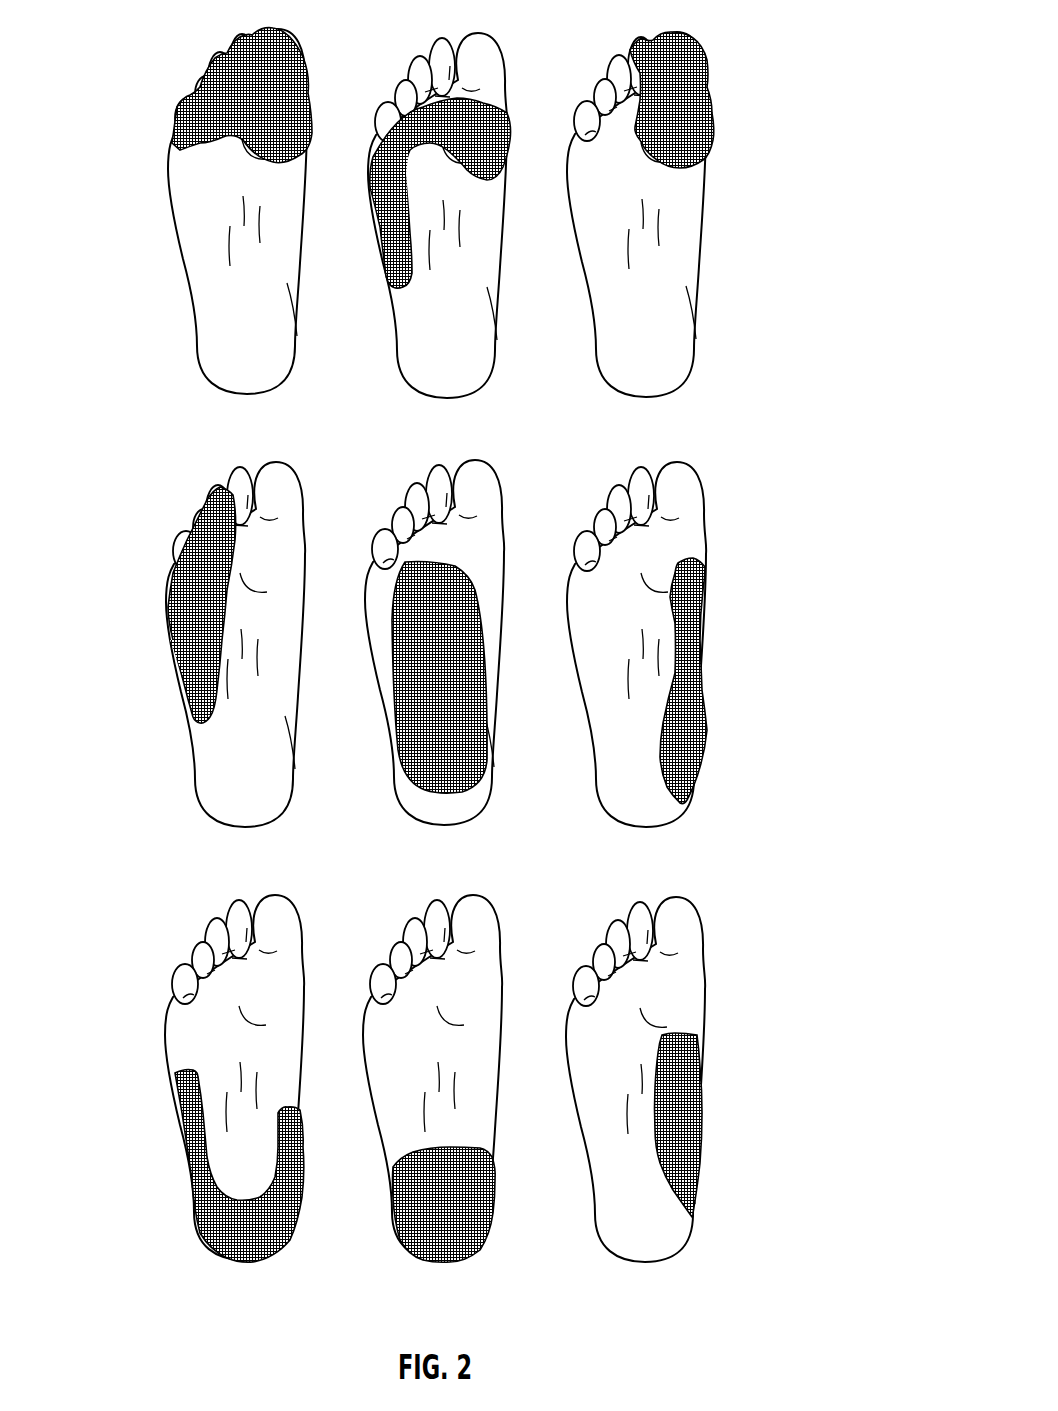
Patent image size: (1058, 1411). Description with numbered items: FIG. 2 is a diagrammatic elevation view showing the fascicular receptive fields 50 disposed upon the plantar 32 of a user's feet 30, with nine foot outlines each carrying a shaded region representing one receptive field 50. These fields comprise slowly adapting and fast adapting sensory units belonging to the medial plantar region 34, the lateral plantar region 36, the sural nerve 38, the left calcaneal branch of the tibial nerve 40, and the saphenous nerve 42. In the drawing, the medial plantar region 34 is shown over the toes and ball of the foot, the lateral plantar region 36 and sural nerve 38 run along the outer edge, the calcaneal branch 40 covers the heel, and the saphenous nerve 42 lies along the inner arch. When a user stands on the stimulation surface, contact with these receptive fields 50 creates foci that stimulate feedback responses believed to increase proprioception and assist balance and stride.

The feet 30 is at (736, 32).
The plantar 32 is at (207, 293).
The medial plantar region 34 is at (292, 107).
The lateral plantar region 36 is at (172, 150).
The sural nerve 38 is at (387, 222).
The left calcaneal branch of the tibial nerve 40 is at (245, 1240).
The saphenous nerve 42 is at (695, 637).
The fascicular receptive fields 50 is at (450, 667).